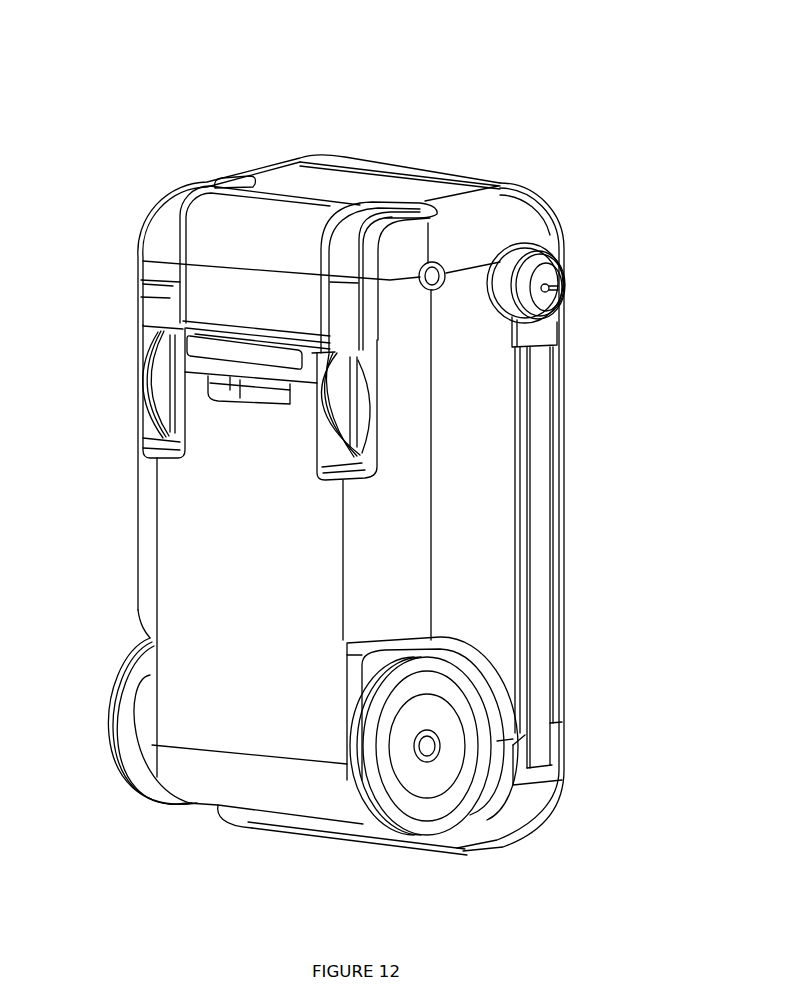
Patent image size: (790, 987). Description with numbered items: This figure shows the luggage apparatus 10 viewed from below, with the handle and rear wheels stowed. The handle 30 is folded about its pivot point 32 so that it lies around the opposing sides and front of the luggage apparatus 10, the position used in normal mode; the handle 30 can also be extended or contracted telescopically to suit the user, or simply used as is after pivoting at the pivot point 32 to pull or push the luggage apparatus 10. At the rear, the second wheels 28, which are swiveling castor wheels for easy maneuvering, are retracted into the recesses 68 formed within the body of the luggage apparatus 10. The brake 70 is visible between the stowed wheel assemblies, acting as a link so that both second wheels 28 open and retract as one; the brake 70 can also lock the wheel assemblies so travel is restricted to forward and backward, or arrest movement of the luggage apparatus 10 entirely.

The luggage apparatus 10 is at (394, 127).
The pivot point 32 is at (552, 277).
The handle 30 is at (540, 550).
The brake 70 is at (147, 343).
The second wheels 28 is at (153, 388).
The recesses 68 is at (153, 430).